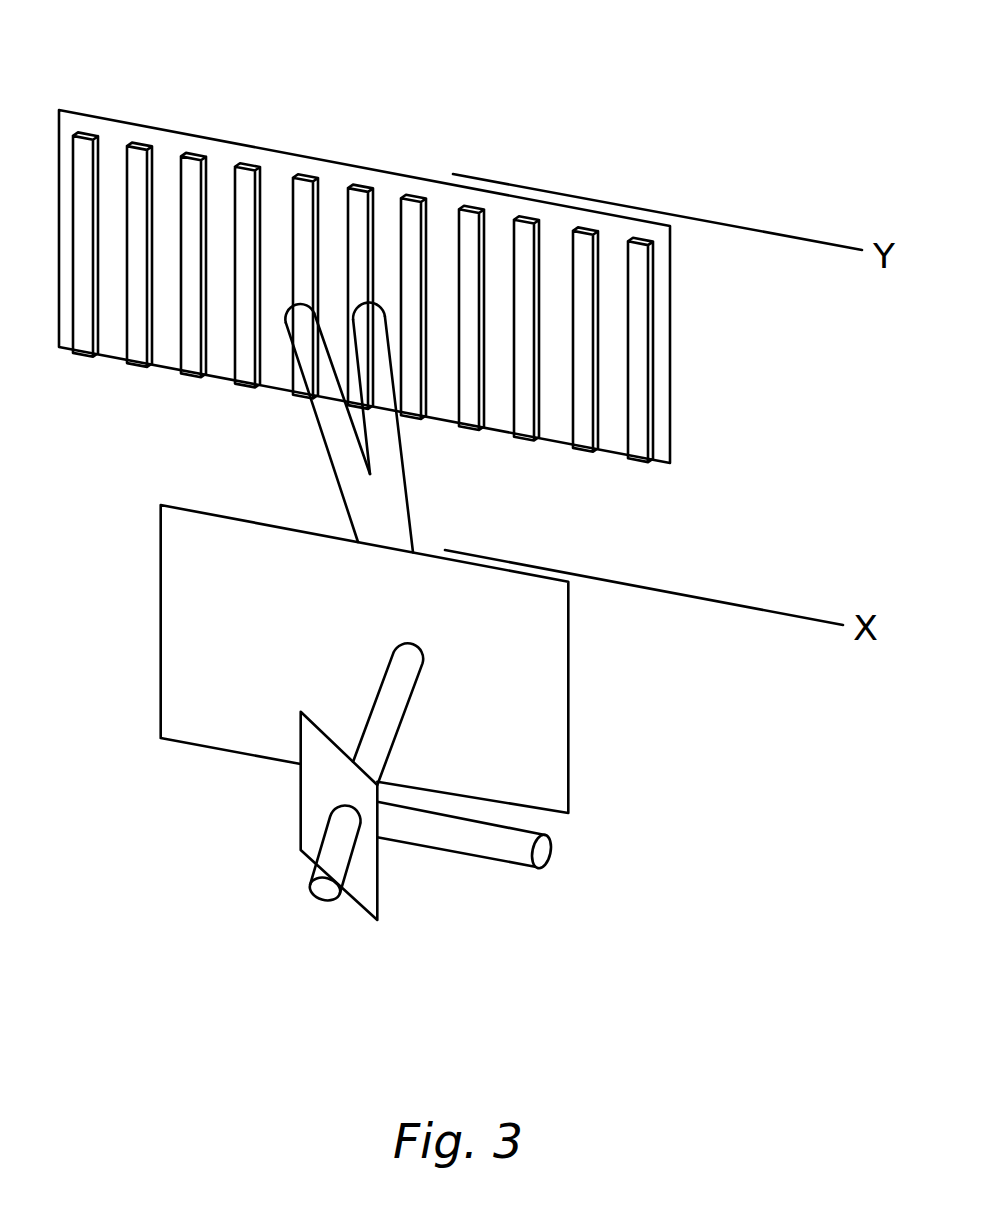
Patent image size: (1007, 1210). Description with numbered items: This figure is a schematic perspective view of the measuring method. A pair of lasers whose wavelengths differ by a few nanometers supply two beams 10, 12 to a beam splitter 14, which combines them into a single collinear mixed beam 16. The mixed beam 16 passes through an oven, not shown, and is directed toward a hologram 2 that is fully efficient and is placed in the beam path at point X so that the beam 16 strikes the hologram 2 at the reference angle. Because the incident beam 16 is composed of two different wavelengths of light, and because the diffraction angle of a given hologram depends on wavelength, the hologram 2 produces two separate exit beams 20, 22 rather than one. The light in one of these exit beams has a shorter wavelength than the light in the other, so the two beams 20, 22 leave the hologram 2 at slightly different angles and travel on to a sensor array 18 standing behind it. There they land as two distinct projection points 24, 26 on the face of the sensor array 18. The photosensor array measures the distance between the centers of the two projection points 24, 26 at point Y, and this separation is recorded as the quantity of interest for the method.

The hologram 2 is at (515, 663).
The beam 10 is at (335, 852).
The beam 12 is at (472, 838).
The beam splitter 14 is at (318, 772).
The mixed beam 16 is at (392, 702).
The sensor array 18 is at (662, 335).
The exit beam 20 is at (277, 275).
The exit beam 22 is at (422, 318).
The projection point 24 is at (306, 303).
The projection point 26 is at (360, 303).